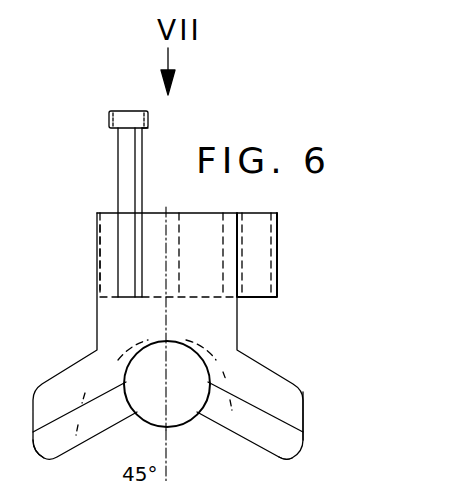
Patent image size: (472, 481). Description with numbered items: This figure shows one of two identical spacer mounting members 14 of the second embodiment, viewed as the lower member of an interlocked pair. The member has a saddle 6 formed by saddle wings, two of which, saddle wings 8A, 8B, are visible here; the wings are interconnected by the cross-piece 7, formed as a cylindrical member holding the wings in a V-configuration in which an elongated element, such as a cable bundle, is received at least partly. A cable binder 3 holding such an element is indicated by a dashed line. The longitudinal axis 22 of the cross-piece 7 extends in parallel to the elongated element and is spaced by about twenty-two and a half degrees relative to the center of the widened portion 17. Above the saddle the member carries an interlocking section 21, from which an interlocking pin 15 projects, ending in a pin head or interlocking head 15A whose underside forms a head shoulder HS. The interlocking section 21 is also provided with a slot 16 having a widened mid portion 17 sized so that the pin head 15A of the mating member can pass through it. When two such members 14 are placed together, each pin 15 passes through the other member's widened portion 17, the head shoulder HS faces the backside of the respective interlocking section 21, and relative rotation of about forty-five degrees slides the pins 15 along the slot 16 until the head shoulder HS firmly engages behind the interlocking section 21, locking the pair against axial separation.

The cable binder 3 is at (100, 378).
The saddle 6 is at (293, 400).
The cross-piece 7 is at (190, 365).
The saddle wing 8A is at (298, 447).
The saddle wing 8B is at (47, 452).
The spacer mounting member 14 is at (347, 164).
The interlocking pin 15 is at (123, 178).
The interlocking pin head 15A is at (108, 118).
The slot 16 is at (258, 262).
The widened mid portion 17 is at (200, 240).
The interlocking section 21 is at (107, 281).
The longitudinal axis of the cross-piece 22 is at (192, 472).
The head shoulder HS is at (142, 129).